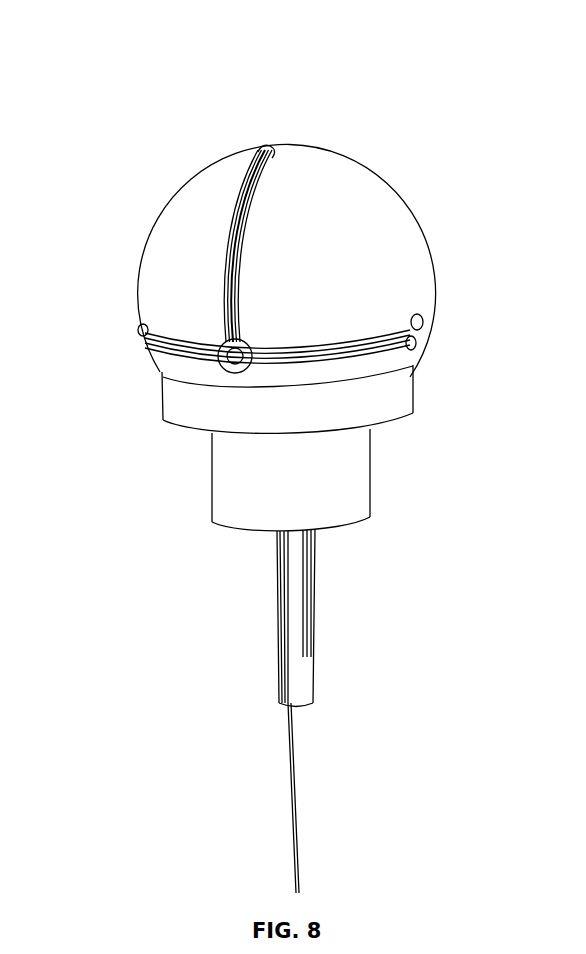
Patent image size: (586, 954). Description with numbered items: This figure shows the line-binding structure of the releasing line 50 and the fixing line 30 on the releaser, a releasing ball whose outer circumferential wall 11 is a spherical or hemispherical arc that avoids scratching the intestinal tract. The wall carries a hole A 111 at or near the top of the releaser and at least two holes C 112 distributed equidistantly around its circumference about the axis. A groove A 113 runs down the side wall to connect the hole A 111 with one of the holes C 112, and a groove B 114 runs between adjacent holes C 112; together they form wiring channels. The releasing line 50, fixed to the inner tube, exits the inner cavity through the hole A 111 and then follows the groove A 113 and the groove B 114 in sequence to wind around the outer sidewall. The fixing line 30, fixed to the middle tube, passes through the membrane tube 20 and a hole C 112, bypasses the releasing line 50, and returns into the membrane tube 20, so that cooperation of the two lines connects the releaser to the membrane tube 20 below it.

The outer circumferential wall 11 is at (403, 208).
The hole A 111 is at (265, 148).
The groove A 113 is at (243, 187).
The groove B 114 is at (138, 332).
The hole C 112 is at (223, 363).
The releasing line 50 is at (223, 330).
The fixing line 30 is at (425, 330).
The membrane tube 20 is at (370, 493).